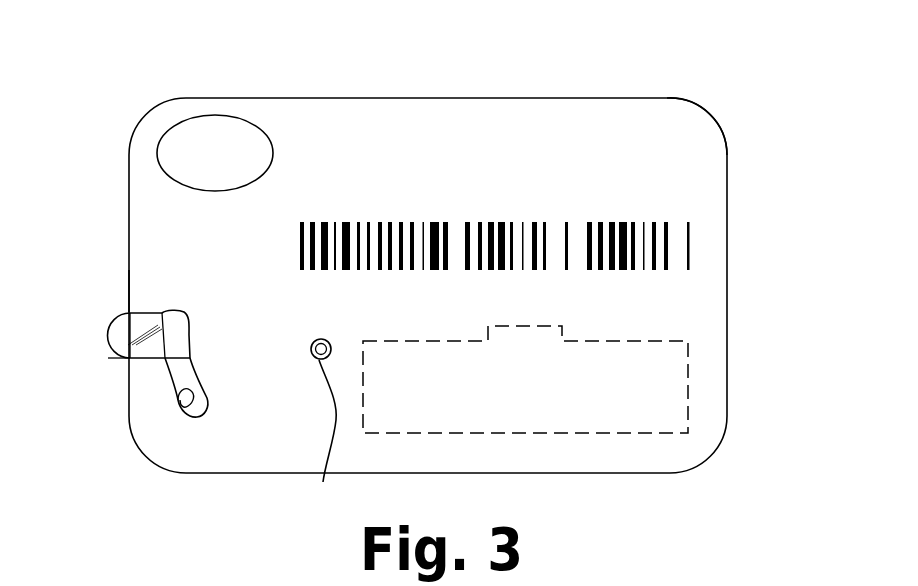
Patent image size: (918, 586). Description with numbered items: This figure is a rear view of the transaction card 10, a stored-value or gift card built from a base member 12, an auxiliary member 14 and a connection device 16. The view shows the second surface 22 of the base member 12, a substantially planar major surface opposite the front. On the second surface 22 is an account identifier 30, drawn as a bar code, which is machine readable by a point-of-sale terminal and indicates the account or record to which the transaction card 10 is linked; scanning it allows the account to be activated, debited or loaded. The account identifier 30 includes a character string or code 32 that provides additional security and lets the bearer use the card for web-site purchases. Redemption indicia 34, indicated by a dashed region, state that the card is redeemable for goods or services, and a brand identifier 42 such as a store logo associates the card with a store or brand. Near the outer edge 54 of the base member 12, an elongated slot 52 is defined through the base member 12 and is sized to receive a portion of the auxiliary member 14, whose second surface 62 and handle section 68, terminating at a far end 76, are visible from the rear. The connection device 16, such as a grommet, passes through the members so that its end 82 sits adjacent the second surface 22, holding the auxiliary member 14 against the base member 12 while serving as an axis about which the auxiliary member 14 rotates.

The transaction card 10 is at (146, 80).
The base member 12 is at (146, 223).
The auxiliary member 14 is at (116, 339).
The connection device 16 is at (324, 441).
The second surface 22 is at (693, 162).
The account identifier 30 is at (689, 241).
The character string or code 32 is at (680, 291).
The redemption indicia 34 is at (688, 378).
The brand identifier 42 is at (236, 128).
The slot 52 is at (182, 403).
The outer edge 54 is at (129, 285).
The second surface of auxiliary member 62 is at (153, 356).
The handle section 68 is at (118, 322).
The far end 76 is at (118, 360).
The end of the grommet 82 is at (311, 354).